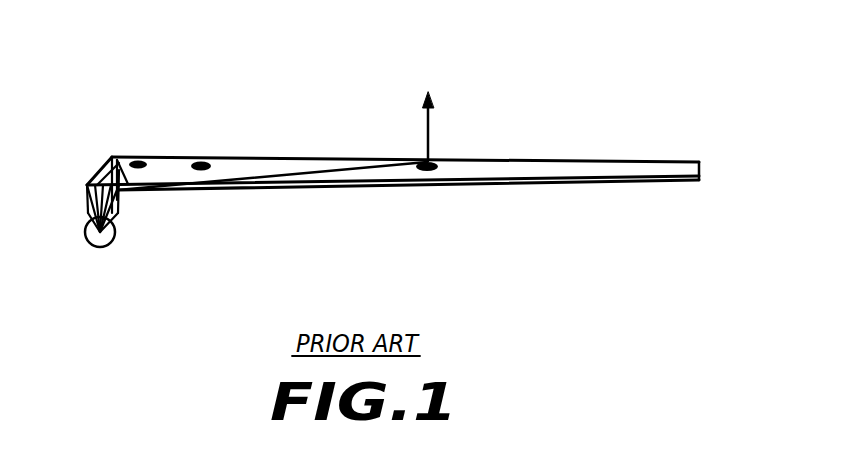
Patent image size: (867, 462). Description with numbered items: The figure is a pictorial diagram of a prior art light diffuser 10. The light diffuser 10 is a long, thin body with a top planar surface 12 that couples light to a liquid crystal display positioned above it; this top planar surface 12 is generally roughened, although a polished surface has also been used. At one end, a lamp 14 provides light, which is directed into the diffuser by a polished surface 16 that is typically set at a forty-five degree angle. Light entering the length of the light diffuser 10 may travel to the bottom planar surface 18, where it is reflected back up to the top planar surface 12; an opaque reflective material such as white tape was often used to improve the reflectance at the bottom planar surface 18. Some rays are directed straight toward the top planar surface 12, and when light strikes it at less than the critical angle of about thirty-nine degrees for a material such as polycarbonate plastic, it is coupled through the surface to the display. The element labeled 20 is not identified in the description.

The prior art wing assembly 10 is at (624, 270).
The wing 12 is at (497, 160).
The pivot roller 14 is at (106, 246).
The support bracket 16 is at (105, 165).
The trailing portion 18 is at (532, 170).
The diagonal brace 20 is at (322, 187).